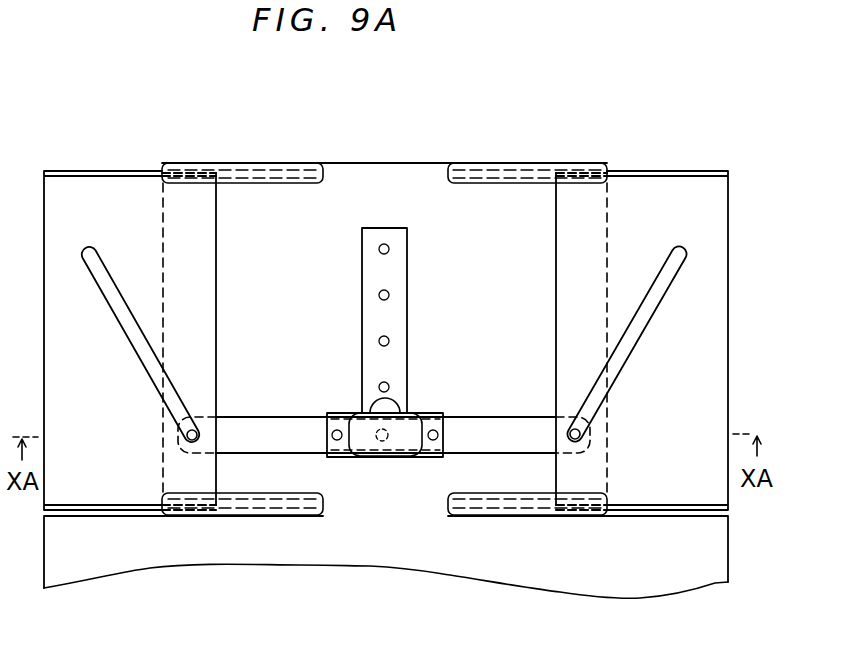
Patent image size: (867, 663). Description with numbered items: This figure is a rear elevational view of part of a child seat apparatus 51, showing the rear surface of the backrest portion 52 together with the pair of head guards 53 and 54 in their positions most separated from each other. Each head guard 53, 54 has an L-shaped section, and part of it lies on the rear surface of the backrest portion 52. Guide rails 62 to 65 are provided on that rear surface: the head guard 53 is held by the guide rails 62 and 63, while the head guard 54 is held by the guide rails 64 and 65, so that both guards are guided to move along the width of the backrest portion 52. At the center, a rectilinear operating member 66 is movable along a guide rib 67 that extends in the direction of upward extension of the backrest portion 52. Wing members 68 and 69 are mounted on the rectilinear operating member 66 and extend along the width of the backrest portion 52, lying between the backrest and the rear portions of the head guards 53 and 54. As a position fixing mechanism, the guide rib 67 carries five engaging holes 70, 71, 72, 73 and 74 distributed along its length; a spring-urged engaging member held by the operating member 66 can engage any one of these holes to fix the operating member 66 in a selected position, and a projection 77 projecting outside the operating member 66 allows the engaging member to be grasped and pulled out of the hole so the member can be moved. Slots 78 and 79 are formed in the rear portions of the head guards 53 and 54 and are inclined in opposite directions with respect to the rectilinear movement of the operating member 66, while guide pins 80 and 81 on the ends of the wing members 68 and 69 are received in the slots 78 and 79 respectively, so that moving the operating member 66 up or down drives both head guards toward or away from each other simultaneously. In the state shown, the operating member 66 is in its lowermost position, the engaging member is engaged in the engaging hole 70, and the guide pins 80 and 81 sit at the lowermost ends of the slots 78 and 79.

The child seat apparatus 51 is at (392, 133).
The backrest portion 52 is at (374, 578).
The head guard 53 is at (678, 162).
The head guard 54 is at (84, 160).
The guide rail 62 is at (488, 176).
The guide rail 63 is at (495, 503).
The guide rail 64 is at (269, 176).
The guide rail 65 is at (262, 501).
The rectilinear operating member 66 is at (365, 460).
The guide rib 67 is at (388, 236).
The wing member 68 is at (519, 420).
The wing member 69 is at (255, 413).
The engaging hole 70 is at (390, 430).
The engaging hole 71 is at (389, 385).
The engaging hole 72 is at (389, 339).
The engaging hole 73 is at (389, 293).
The engaging hole 74 is at (389, 247).
The projection 77 is at (380, 405).
The slot 78 is at (637, 345).
The slot 79 is at (128, 341).
The guide pin 80 is at (583, 437).
The guide pin 81 is at (187, 434).